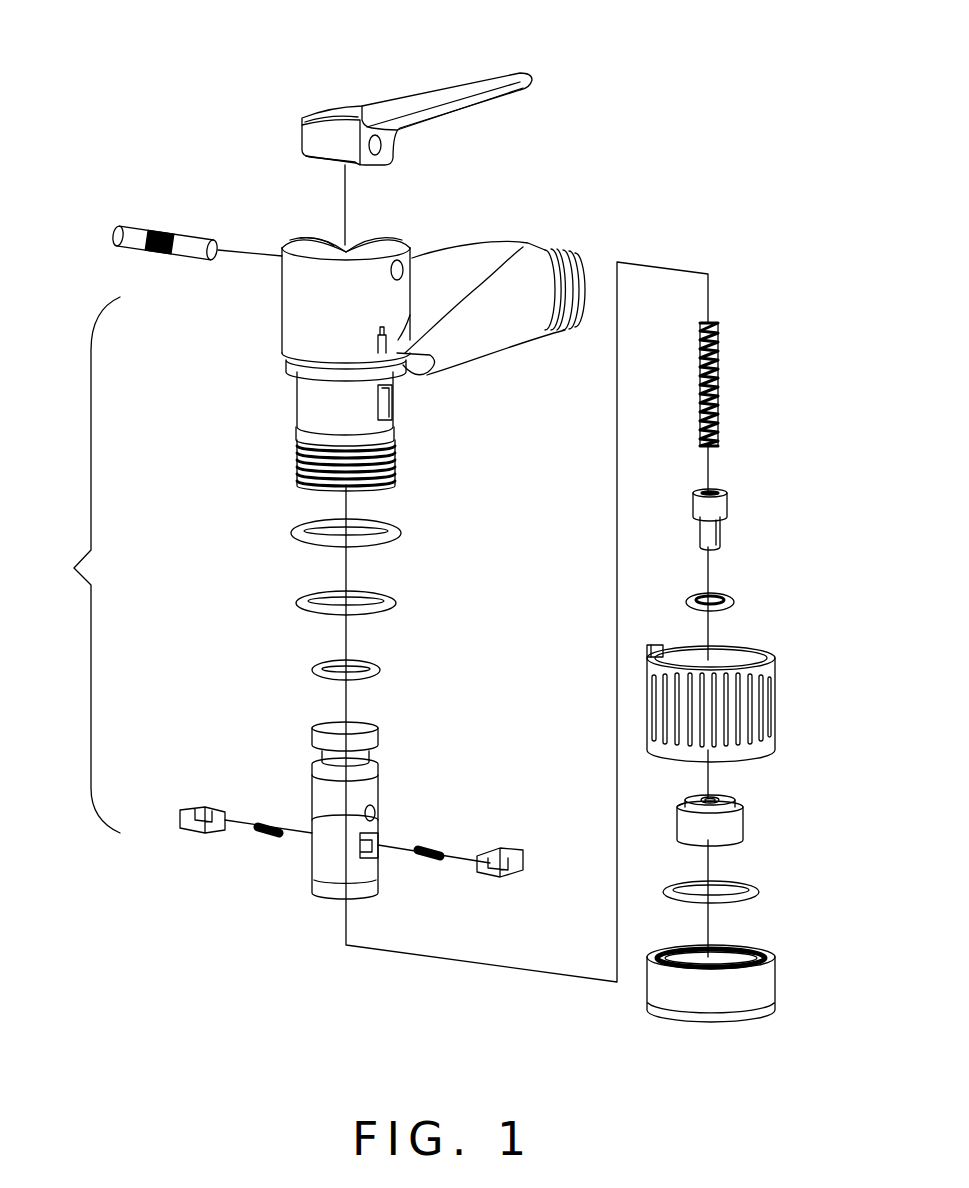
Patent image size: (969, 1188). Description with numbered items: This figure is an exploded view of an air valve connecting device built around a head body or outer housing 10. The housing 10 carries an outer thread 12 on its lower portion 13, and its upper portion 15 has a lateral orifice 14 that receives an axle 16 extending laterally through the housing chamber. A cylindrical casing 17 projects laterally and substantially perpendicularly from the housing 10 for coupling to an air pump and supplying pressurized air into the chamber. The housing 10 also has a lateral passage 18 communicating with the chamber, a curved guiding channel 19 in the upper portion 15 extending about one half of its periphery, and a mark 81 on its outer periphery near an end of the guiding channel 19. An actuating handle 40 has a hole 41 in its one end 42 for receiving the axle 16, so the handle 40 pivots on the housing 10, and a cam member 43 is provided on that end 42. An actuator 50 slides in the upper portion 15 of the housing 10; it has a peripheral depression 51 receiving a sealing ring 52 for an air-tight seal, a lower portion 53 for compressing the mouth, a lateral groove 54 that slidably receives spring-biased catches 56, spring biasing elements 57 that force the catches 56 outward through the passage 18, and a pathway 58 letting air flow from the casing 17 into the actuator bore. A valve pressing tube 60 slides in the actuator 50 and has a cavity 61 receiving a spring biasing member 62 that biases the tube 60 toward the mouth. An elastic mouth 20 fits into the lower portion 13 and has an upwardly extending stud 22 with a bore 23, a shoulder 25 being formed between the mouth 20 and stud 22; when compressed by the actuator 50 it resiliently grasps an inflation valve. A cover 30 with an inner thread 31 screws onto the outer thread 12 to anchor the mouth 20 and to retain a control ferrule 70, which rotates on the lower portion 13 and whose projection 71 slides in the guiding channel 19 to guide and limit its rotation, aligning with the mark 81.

The head body or outer housing 10 is at (303, 307).
The outer thread 12 is at (397, 457).
The lower portion 13 is at (297, 462).
The lateral orifice 14 is at (404, 269).
The upper portion 15 is at (282, 247).
The axle 16 is at (128, 228).
The cylindrical casing 17 is at (544, 327).
The passage 18 is at (387, 403).
The guiding channel 19 is at (284, 354).
The elastic grasping member or mouth 20 is at (723, 815).
The stud 22 is at (733, 798).
The bore 23 is at (706, 799).
The outer peripheral shoulder 25 is at (683, 803).
The cover 30 is at (734, 972).
The inner thread 31 is at (733, 945).
The actuating handle 40 is at (434, 92).
The aperture or hole 41 is at (380, 144).
The one end 42 is at (323, 113).
The cam member 43 is at (328, 157).
The actuating member or actuator 50 is at (333, 839).
The peripheral depression 51 is at (320, 753).
The sealing ring 52 is at (313, 673).
The lower portion 53 is at (328, 897).
The groove 54 is at (367, 857).
The catches 56 is at (183, 817).
The spring biasing elements 57 is at (427, 847).
The pathway 58 is at (377, 810).
The valve pressing member or tube 60 is at (746, 507).
The cavity 61 is at (713, 492).
The spring biasing member 62 is at (718, 378).
The sleeve or control ferrule 70 is at (729, 652).
The key or projection 71 is at (653, 645).
The sign or mark 81 is at (467, 298).